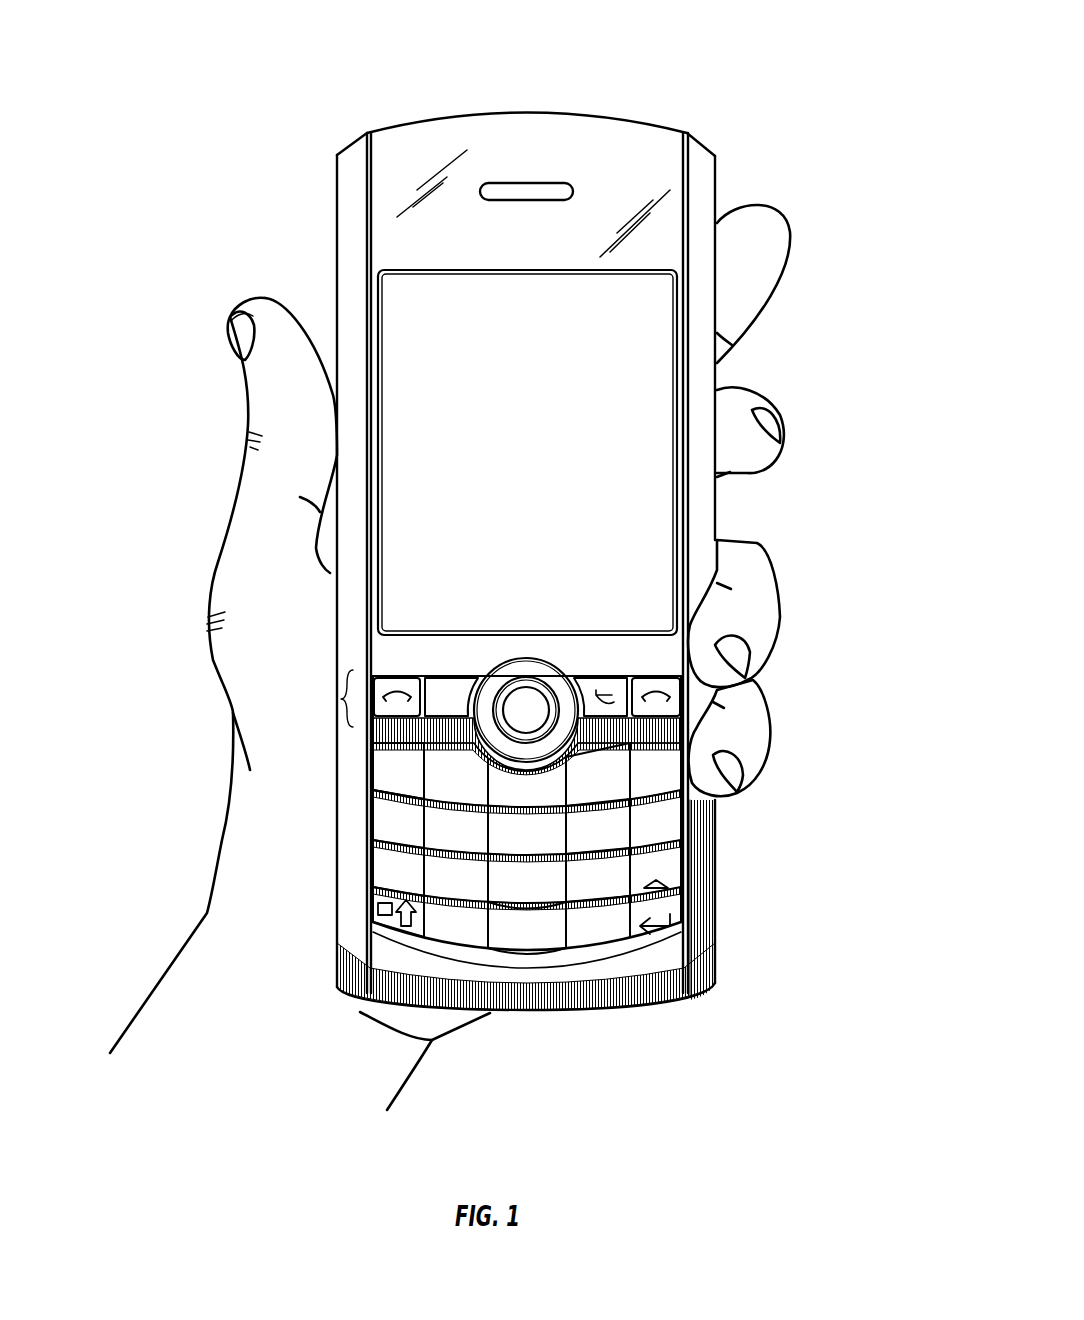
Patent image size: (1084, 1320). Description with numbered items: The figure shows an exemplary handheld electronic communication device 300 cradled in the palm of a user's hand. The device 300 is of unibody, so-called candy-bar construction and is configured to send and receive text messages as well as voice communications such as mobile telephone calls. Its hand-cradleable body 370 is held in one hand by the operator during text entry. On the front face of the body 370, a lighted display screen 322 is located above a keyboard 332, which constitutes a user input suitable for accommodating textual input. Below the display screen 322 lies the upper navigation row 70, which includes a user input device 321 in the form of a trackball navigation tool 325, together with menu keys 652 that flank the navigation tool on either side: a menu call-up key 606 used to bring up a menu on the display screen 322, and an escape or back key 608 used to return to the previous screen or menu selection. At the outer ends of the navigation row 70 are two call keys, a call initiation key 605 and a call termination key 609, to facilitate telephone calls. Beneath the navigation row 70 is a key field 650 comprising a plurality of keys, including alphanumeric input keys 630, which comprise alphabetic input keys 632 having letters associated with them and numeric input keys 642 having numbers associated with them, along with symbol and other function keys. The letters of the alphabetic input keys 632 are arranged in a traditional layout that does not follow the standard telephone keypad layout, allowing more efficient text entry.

The handheld electronic communication device 300 is at (668, 50).
The body 370 is at (703, 195).
The display screen 322 is at (405, 283).
The menu keys 652 is at (593, 668).
The navigation row 70 is at (347, 699).
The menu call-up key 606 is at (447, 690).
The escape or back key 608 is at (608, 688).
The call termination key 609 is at (672, 699).
The call initiation key 605 is at (367, 727).
The user input device 321 is at (373, 793).
The alphabetic input keys 632 is at (367, 812).
The trackball navigation tool 325 is at (575, 748).
The alphanumeric input keys 630 is at (613, 872).
The key field 650 is at (384, 933).
The numeric input keys 642 is at (546, 928).
The keyboard 332 is at (540, 970).